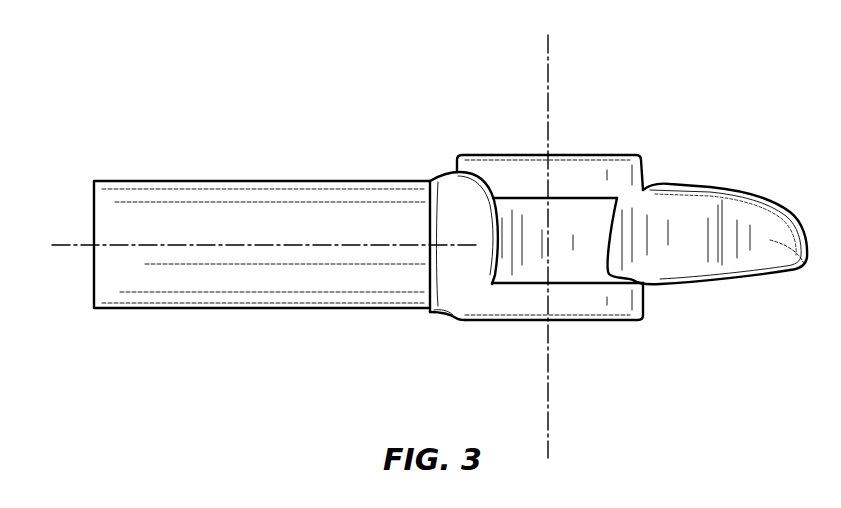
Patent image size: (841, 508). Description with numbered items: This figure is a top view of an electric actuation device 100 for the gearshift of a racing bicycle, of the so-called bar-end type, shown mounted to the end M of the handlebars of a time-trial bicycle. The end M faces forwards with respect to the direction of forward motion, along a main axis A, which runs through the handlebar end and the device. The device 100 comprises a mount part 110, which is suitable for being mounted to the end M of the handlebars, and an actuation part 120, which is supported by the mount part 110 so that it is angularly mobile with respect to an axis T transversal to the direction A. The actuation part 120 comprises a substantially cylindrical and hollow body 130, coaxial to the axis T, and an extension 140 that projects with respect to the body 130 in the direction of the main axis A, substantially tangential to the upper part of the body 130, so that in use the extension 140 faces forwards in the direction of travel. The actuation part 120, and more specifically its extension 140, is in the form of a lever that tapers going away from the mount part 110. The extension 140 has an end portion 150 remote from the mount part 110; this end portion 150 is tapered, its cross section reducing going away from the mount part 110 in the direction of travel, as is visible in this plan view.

The electric actuation device 100 is at (443, 106).
The mount part 110 is at (460, 284).
The actuation part 120 is at (655, 170).
The body 130 is at (585, 215).
The extension 140 is at (712, 189).
The end portion 150 is at (768, 245).
The end of bicycle handlebars M is at (177, 195).
The main axis A is at (65, 248).
The axis T is at (549, 418).